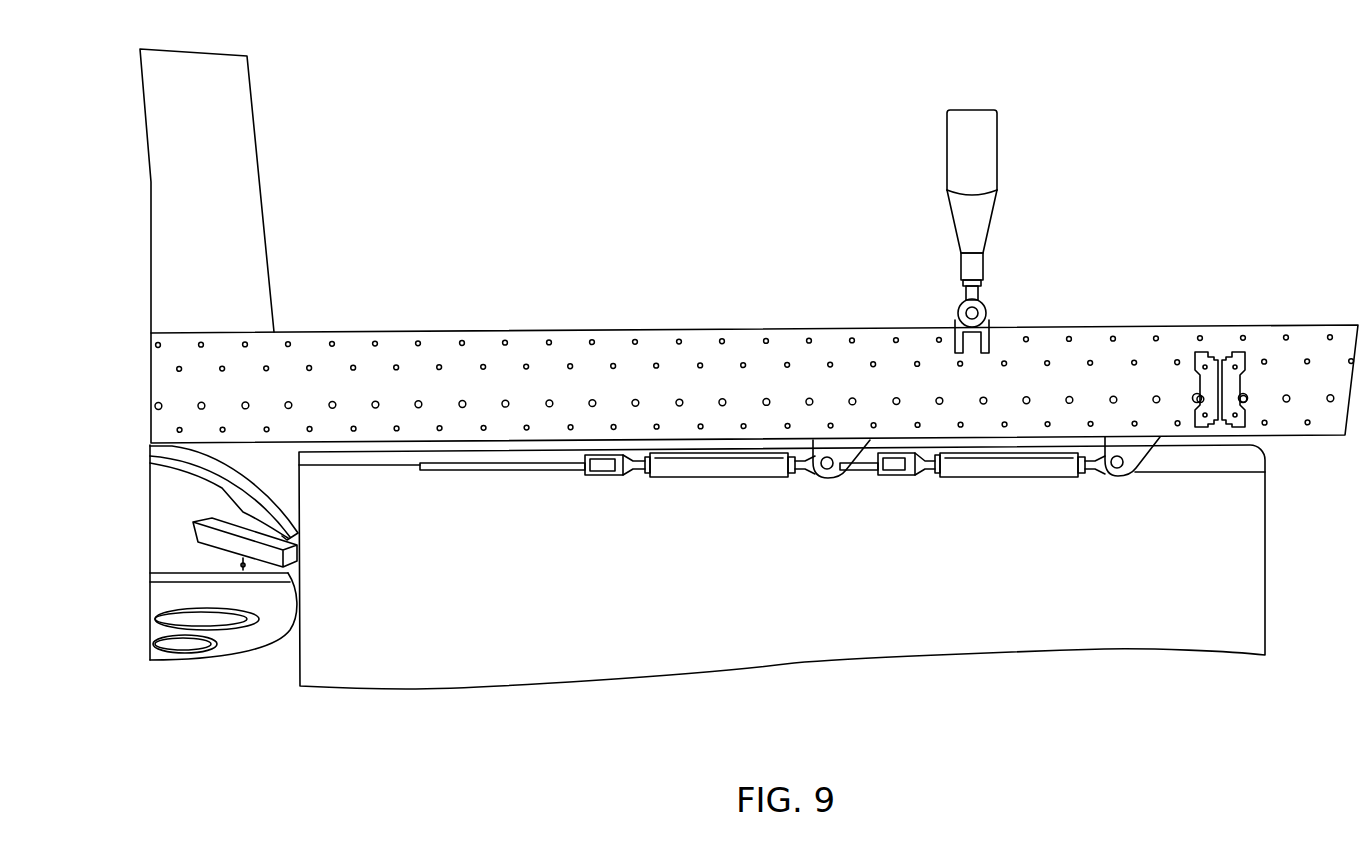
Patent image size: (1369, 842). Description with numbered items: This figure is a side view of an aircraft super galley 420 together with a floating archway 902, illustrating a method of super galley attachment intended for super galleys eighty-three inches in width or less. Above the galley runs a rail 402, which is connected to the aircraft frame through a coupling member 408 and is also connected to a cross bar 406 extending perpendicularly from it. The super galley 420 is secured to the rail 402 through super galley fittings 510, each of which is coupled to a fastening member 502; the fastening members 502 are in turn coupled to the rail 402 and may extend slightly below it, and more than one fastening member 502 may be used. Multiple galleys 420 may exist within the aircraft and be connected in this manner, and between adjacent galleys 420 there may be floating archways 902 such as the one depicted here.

The floating archway 902 is at (245, 181).
The rail 402 is at (520, 330).
The aircraft super galley 420 is at (1265, 565).
The fastening member 502 is at (823, 453).
The super galley fitting 510 is at (535, 472).
The coupling member 408 is at (985, 143).
The cross bar 406 is at (1225, 355).